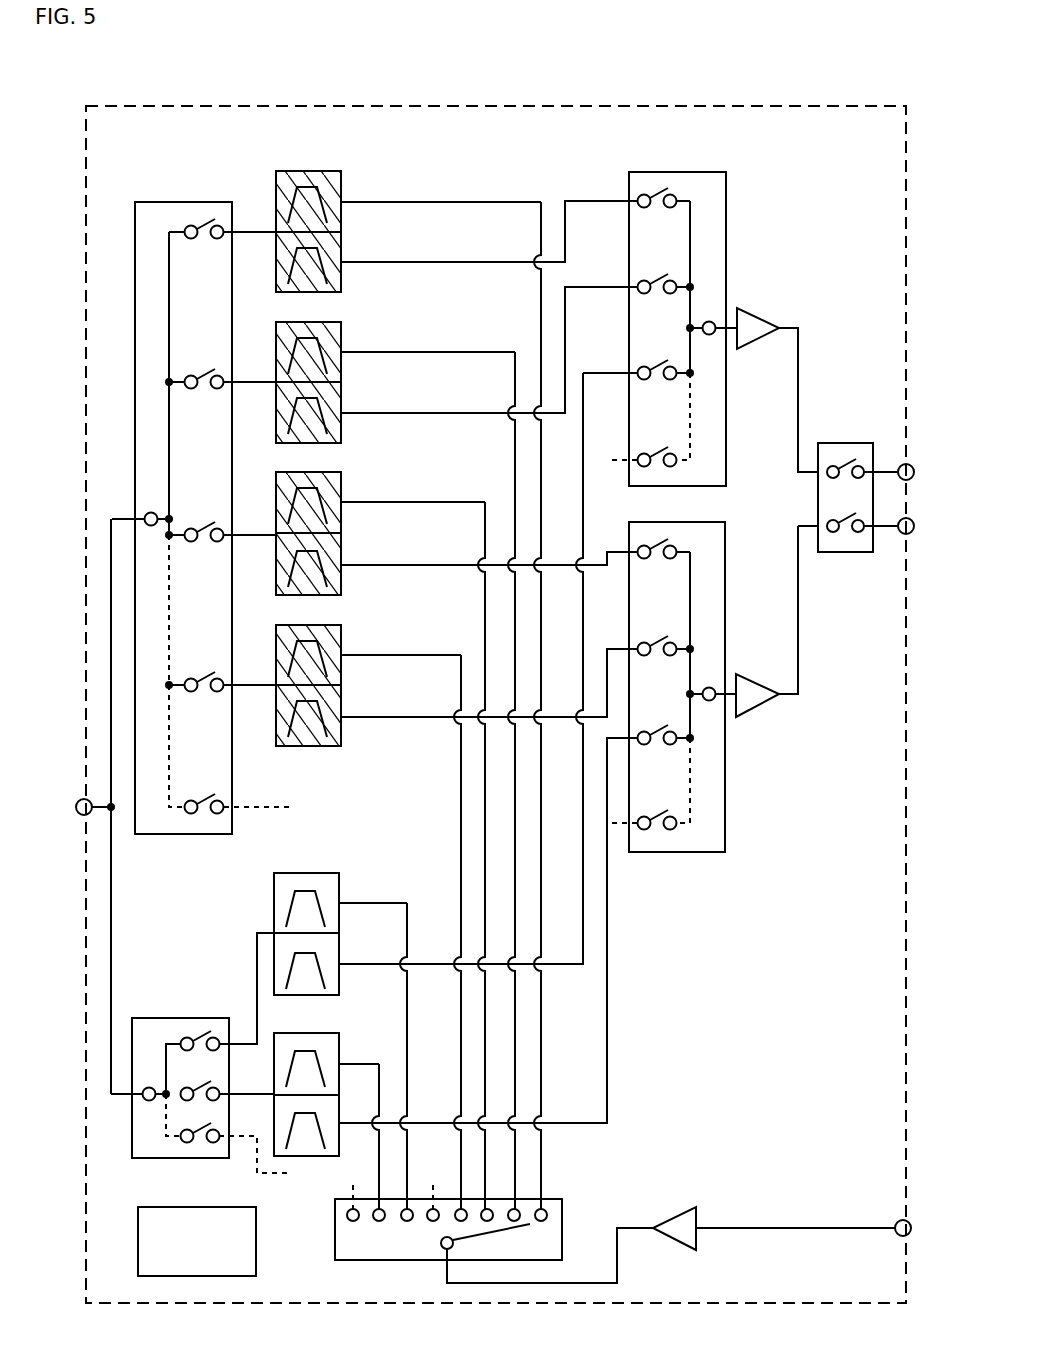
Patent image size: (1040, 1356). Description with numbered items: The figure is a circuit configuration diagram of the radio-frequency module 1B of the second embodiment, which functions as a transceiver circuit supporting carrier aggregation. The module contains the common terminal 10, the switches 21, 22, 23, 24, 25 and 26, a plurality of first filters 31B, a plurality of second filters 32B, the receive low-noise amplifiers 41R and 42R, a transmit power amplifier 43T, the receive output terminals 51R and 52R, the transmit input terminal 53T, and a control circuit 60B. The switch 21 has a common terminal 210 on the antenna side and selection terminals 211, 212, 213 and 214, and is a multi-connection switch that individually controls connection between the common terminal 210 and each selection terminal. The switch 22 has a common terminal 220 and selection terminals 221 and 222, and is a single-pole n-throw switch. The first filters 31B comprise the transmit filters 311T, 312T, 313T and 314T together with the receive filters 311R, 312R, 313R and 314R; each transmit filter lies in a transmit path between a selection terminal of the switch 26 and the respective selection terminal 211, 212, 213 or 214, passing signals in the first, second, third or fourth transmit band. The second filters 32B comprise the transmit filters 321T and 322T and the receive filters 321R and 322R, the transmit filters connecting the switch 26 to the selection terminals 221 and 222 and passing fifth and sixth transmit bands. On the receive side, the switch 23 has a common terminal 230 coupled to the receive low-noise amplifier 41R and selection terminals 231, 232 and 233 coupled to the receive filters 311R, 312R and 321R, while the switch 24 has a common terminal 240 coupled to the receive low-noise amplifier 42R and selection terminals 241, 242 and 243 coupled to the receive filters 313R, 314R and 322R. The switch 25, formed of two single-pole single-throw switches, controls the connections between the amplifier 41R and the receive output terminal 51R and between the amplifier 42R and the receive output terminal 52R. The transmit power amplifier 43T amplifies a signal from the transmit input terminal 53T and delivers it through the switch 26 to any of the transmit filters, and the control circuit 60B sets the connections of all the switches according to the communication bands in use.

The radio-frequency module 1B is at (478, 106).
The common terminal 10 is at (79, 800).
The switch 21 is at (170, 202).
The common terminal 210 is at (145, 513).
The selection terminal 211 is at (228, 224).
The selection terminal 212 is at (228, 374).
The selection terminal 213 is at (228, 527).
The selection terminal 214 is at (228, 677).
The switch 22 is at (170, 1018).
The common terminal 220 is at (144, 1103).
The selection terminal 221 is at (220, 1050).
The selection terminal 222 is at (220, 1100).
The switch 23 is at (696, 172).
The common terminal 230 is at (713, 321).
The selection terminal 231 is at (636, 196).
The selection terminal 232 is at (636, 282).
The selection terminal 233 is at (636, 368).
The switch 24 is at (698, 522).
The common terminal 240 is at (713, 688).
The selection terminal 241 is at (642, 545).
The selection terminal 242 is at (648, 656).
The selection terminal 243 is at (648, 745).
The switch 25 is at (845, 443).
The switch 26 is at (562, 1228).
The plurality of first filters 31B is at (330, 436).
The transmit filter 311T is at (343, 192).
The receive filter 311R is at (343, 283).
The transmit filter 312T is at (343, 343).
The receive filter 312R is at (343, 433).
The transmit filter 313T is at (343, 493).
The receive filter 313R is at (343, 584).
The transmit filter 314T is at (343, 645).
The receive filter 314R is at (343, 734).
The plurality of second filters 32B is at (330, 1000).
The transmit filter 321T is at (341, 894).
The receive filter 321R is at (341, 984).
The transmit filter 322T is at (341, 1053).
The receive filter 322R is at (341, 1145).
The receive low-noise amplifier 41R is at (748, 343).
The receive low-noise amplifier 42R is at (748, 712).
The transmit power amplifier 43T is at (680, 1245).
The receive output terminal 51R is at (911, 480).
The receive output terminal 52R is at (911, 534).
The transmit input terminal 53T is at (909, 1236).
The control circuit 60B is at (256, 1237).